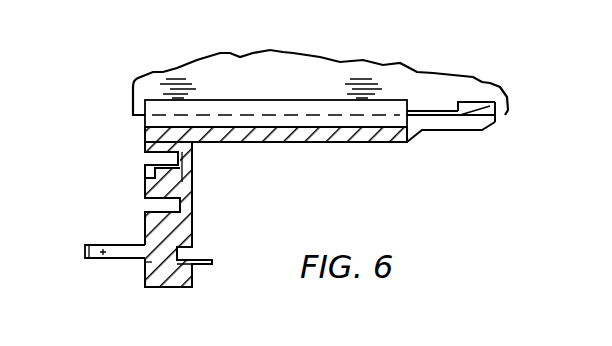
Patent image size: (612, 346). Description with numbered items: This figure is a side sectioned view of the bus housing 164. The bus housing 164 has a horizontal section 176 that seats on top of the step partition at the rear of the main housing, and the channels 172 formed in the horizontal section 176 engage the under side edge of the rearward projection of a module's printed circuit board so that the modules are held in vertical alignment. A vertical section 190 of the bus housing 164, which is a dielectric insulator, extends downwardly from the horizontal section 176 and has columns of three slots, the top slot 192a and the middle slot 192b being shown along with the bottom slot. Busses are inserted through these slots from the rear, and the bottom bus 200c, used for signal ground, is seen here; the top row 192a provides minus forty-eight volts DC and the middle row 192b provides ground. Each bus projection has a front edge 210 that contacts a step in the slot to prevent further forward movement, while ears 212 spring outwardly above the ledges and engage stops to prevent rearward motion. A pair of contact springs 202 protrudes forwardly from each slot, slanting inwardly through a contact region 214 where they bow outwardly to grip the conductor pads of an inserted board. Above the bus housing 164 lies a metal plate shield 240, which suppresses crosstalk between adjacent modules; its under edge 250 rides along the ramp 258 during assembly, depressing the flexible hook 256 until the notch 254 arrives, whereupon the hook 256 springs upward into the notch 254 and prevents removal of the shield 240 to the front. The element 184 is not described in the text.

The bus housing 164 is at (134, 138).
The channels 172 is at (246, 108).
The horizontal section 176 is at (388, 143).
The support member 184 is at (193, 182).
The vertical section 190 is at (184, 288).
The top row slot 192a is at (145, 157).
The middle row slot 192b is at (145, 199).
The bottom bus 200c is at (103, 267).
The contact springs 202 is at (126, 251).
The front edge 210 is at (148, 263).
The ears 212 is at (193, 248).
The contact region 214 is at (97, 245).
The metal plate shield 240 is at (318, 53).
The under edge 250 is at (497, 124).
The notch 254 is at (472, 100).
The flexible hook 256 is at (488, 118).
The ramp 258 is at (480, 103).